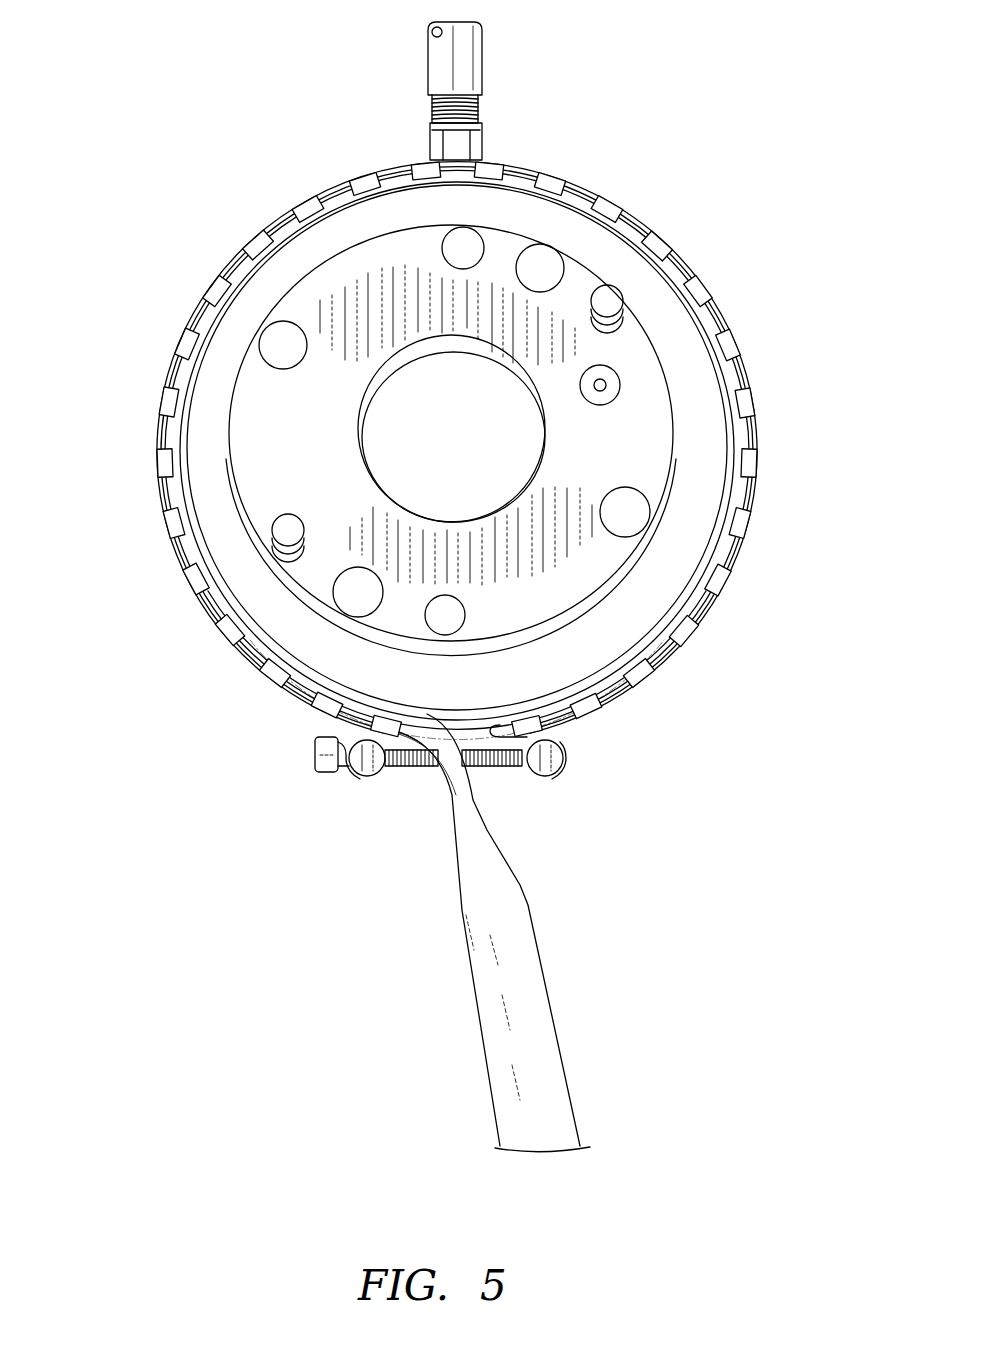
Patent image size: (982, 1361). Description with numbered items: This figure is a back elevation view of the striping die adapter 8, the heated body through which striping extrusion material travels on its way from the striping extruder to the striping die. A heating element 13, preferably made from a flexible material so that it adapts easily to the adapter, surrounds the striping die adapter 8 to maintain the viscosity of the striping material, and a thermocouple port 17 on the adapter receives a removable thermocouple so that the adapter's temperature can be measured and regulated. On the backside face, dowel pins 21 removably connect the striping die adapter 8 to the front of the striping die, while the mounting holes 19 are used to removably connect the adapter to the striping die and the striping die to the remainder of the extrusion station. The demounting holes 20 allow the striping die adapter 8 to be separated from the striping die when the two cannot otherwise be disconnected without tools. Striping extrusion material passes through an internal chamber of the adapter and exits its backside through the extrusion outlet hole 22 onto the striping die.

The striping die adapter 8 is at (128, 360).
The heating element 13 is at (747, 387).
The thermocouple port 17 is at (470, 70).
The mounting holes 19 is at (560, 252).
The demounting holes 20 is at (485, 237).
The dowel pins 21 is at (612, 303).
The extrusion outlet hole 22 is at (620, 380).